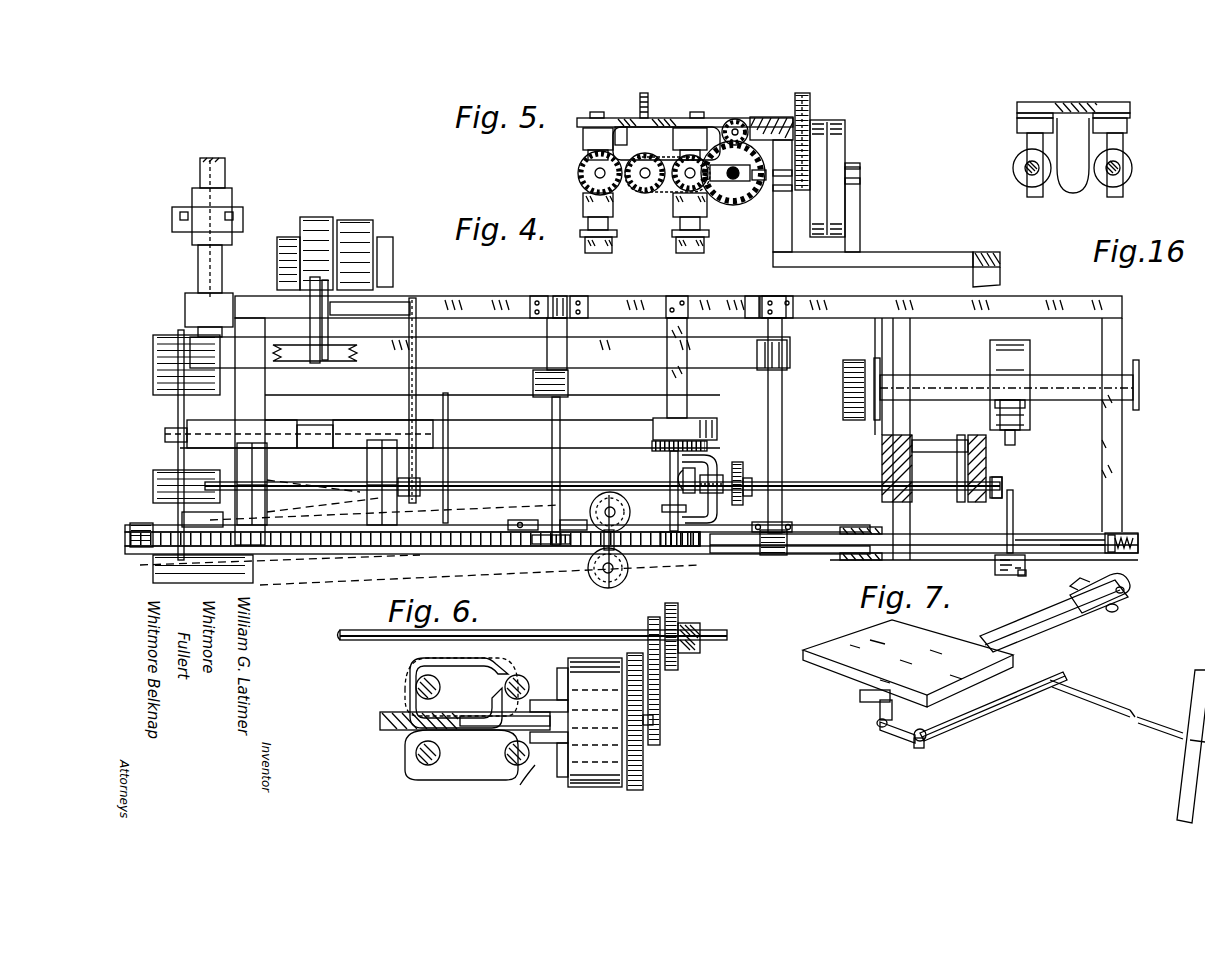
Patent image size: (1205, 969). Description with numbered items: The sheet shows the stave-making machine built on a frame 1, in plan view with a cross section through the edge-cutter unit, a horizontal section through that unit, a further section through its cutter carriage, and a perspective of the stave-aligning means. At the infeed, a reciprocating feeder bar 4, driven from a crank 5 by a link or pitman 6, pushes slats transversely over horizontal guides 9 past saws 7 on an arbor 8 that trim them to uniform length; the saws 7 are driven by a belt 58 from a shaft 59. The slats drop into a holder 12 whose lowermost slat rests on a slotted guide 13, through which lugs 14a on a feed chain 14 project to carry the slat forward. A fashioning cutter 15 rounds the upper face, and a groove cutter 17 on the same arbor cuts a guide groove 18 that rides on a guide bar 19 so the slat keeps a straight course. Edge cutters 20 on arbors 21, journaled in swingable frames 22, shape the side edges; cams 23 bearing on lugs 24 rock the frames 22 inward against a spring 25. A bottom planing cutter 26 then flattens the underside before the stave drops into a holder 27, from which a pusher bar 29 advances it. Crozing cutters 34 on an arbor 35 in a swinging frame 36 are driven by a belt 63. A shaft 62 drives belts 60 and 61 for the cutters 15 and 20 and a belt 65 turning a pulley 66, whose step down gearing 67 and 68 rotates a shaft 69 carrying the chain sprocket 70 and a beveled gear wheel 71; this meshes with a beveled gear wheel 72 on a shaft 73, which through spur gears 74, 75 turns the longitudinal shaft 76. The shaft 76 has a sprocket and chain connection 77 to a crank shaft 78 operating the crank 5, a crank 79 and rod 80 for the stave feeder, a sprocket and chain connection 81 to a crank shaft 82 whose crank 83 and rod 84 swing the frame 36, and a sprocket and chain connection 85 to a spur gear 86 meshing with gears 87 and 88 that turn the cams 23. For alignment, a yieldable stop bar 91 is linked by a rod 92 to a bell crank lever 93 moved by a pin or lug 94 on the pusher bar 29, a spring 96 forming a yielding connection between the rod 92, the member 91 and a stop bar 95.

In FIG. 4, the frame 1 is at (640, 296).
In FIG. 5, the frame 1 is at (980, 252).
In FIG. 4, the reciprocating feeder bar 4 is at (267, 468).
In FIG. 4, the crank 5 is at (330, 300).
In FIG. 4, the link or pitman 6 is at (310, 340).
In FIG. 5, the link or pitman 6 is at (583, 143).
In FIG. 4, the saws 7 is at (178, 412).
In FIG. 4, the arbor 8 is at (345, 448).
In FIG. 4, the horizontal guides 9 is at (267, 515).
In FIG. 4, the holder 12 is at (378, 554).
In FIG. 4, the longitudinally slotted guide 13 is at (240, 580).
In FIG. 5, the longitudinally slotted guide 13 is at (617, 127).
In FIG. 4, the feed chain 14 is at (182, 583).
In FIG. 4, the lugs 14a is at (680, 575).
In FIG. 4, the fashioning cutter 15 is at (560, 555).
In FIG. 4, the groove cutter 17 is at (540, 555).
In FIG. 5, the guide groove 18 is at (660, 115).
In FIG. 4, the guide bar 19 is at (750, 553).
In FIG. 5, the guide bar 19 is at (644, 93).
In FIG. 4, the edge cutters 20 is at (590, 510).
In FIG. 5, the edge cutters 20 is at (568, 119).
In FIG. 16, the edge cutters 20 is at (1017, 108).
In FIG. 5, the arbors 21 is at (583, 200).
In FIG. 16, the arbors 21 is at (1027, 148).
In FIG. 6, the arbors 21 is at (517, 766).
In FIG. 5, the swingable frames 22 is at (610, 195).
In FIG. 16, the swingable frames 22 is at (1017, 128).
In FIG. 6, the swingable frames 22 is at (480, 672).
In FIG. 16, the cams 23 is at (1015, 180).
In FIG. 6, the cams 23 is at (560, 675).
In FIG. 16, the lugs 24 is at (1072, 193).
In FIG. 6, the lugs 24 is at (535, 780).
In FIG. 6, the spring 25 is at (470, 730).
In FIG. 4, the bottom planing cutter 26 is at (778, 555).
In FIG. 4, the holder 27 is at (972, 553).
In FIG. 4, the pusher bar 29 is at (1005, 575).
In FIG. 7, the pusher bar 29 is at (835, 672).
In FIG. 4, the crozing cutters 34 is at (876, 365).
In FIG. 4, the arbor 35 is at (1112, 355).
In FIG. 4, the swinging frame 36 is at (970, 375).
In FIG. 4, the belt 58 is at (318, 220).
In FIG. 4, the shaft 59 is at (290, 232).
In FIG. 4, the belt 60 is at (513, 385).
In FIG. 4, the belt 61 is at (420, 557).
In FIG. 4, the shaft 62 is at (200, 265).
In FIG. 4, the belt 63 is at (1012, 350).
In FIG. 4, the belt 65 is at (506, 430).
In FIG. 4, the pulley 66 is at (703, 418).
In FIG. 5, the pulley 66 is at (840, 157).
In FIG. 5, the step down gearing 67 is at (860, 180).
In FIG. 4, the step down gearing 68 is at (655, 440).
In FIG. 5, the step down gearing 68 is at (810, 99).
In FIG. 4, the shaft 69 is at (670, 468).
In FIG. 5, the shaft 69 is at (810, 118).
In FIG. 4, the sprocket 70 is at (675, 547).
In FIG. 4, the beveled gear wheel 71 is at (665, 492).
In FIG. 4, the beveled gear wheel 72 is at (718, 462).
In FIG. 4, the shaft 73 is at (725, 495).
In FIG. 5, the shaft 73 is at (736, 118).
In FIG. 4, the spur gear 74 is at (743, 478).
In FIG. 5, the spur gear 74 is at (765, 117).
In FIG. 4, the spur gear 75 is at (748, 496).
In FIG. 5, the spur gear 75 is at (752, 203).
In FIG. 6, the spur gear 75 is at (680, 607).
In FIG. 4, the shaft 76 is at (574, 482).
In FIG. 5, the shaft 76 is at (725, 205).
In FIG. 6, the shaft 76 is at (730, 630).
In FIG. 4, the sprocket and chain connection 77 is at (422, 355).
In FIG. 4, the crank shaft 78 is at (400, 302).
In FIG. 4, the crank 79 is at (1002, 478).
In FIG. 7, the crank 79 is at (1116, 579).
In FIG. 4, the rod 80 is at (1013, 515).
In FIG. 7, the rod 80 is at (1030, 632).
In FIG. 4, the sprocket and chain connection 81 is at (957, 462).
In FIG. 4, the crank shaft 82 is at (947, 440).
In FIG. 4, the crank 83 is at (1006, 445).
In FIG. 4, the rod 84 is at (1020, 415).
In FIG. 5, the sprocket and chain connection 85 is at (580, 170).
In FIG. 6, the sprocket and chain connection 85 is at (645, 697).
In FIG. 5, the spur gear 86 is at (660, 190).
In FIG. 6, the spur gear 86 is at (660, 722).
In FIG. 5, the gear 87 is at (660, 155).
In FIG. 6, the gear 87 is at (660, 690).
In FIG. 5, the gear 88 is at (580, 162).
In FIG. 6, the gear 88 is at (645, 785).
In FIG. 4, the yieldable stop bar 91 is at (1111, 537).
In FIG. 4, the rod 92 is at (1085, 540).
In FIG. 7, the rod 92 is at (1133, 708).
In FIG. 4, the bell crank lever 93 is at (1026, 565).
In FIG. 7, the bell crank lever 93 is at (982, 717).
In FIG. 4, the pin or lug 94 is at (1024, 574).
In FIG. 7, the pin or lug 94 is at (885, 730).
In FIG. 4, the stop bar 95 is at (1140, 546).
In FIG. 4, the spring 96 is at (1138, 538).